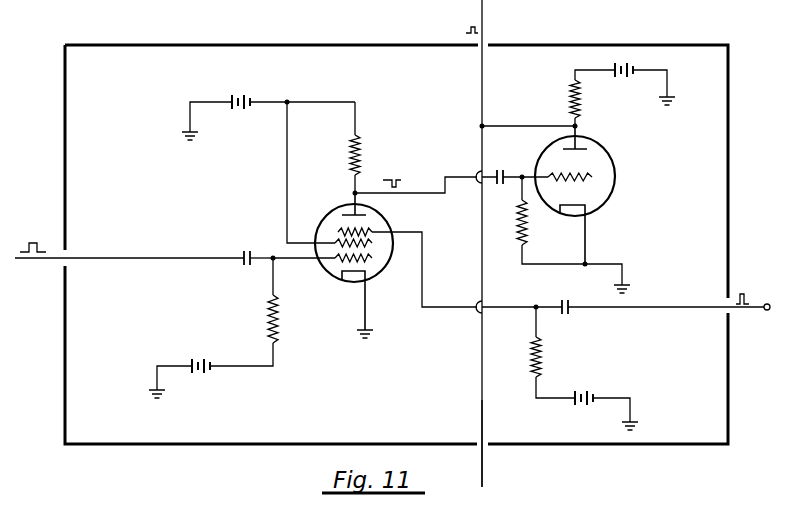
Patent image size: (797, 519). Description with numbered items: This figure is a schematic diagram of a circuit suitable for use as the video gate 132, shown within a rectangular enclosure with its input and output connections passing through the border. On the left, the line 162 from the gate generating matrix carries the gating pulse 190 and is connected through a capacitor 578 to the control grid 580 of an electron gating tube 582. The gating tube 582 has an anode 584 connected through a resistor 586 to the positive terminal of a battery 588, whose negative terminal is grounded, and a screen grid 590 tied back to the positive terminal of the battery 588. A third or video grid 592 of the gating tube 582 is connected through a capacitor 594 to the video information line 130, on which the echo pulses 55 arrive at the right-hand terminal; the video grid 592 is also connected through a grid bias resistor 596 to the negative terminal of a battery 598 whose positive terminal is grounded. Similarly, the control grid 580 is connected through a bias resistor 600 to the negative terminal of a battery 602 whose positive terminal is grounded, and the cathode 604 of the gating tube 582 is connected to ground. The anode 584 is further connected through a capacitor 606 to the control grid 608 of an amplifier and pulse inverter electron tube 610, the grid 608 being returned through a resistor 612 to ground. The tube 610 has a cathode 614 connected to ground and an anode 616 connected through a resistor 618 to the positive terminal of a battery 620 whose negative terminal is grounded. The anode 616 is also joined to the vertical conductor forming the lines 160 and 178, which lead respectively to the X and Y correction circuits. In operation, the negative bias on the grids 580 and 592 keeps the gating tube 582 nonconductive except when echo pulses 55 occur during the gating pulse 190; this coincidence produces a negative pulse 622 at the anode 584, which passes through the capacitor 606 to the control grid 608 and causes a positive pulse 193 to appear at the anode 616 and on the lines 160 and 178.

The echo pulse 55 is at (746, 298).
The video information line 130 is at (733, 309).
The video gate 132 is at (524, 446).
The line 160 is at (486, 12).
The line 162 is at (22, 263).
The line 178 is at (484, 482).
The gating pulse 190 is at (20, 250).
The positive pulse 193 is at (466, 32).
The capacitor 578 is at (244, 250).
The control grid 580 is at (332, 262).
The electron gating tube 582 is at (339, 215).
The anode 584 is at (368, 215).
The resistor 586 is at (358, 152).
The battery 588 is at (252, 101).
The screen grid 590 is at (306, 243).
The video grid 592 is at (372, 234).
The capacitor 594 is at (568, 313).
The grid bias resistor 596 is at (540, 357).
The battery 598 is at (600, 395).
The bias resistor 600 is at (278, 320).
The battery 602 is at (194, 360).
The cathode 604 is at (362, 281).
The capacitor 606 is at (492, 172).
The control grid 608 is at (592, 180).
The amplifier and pulse inverter electron tube 610 is at (614, 190).
The resistor 612 is at (526, 240).
The cathode 614 is at (588, 208).
The anode 616 is at (586, 148).
The resistor 618 is at (579, 100).
The battery 620 is at (636, 70).
The negative pulse 622 is at (386, 179).